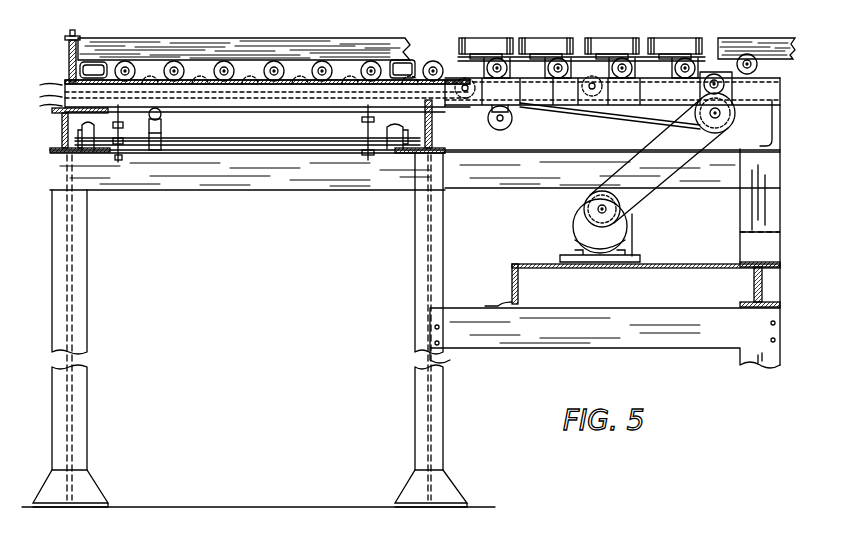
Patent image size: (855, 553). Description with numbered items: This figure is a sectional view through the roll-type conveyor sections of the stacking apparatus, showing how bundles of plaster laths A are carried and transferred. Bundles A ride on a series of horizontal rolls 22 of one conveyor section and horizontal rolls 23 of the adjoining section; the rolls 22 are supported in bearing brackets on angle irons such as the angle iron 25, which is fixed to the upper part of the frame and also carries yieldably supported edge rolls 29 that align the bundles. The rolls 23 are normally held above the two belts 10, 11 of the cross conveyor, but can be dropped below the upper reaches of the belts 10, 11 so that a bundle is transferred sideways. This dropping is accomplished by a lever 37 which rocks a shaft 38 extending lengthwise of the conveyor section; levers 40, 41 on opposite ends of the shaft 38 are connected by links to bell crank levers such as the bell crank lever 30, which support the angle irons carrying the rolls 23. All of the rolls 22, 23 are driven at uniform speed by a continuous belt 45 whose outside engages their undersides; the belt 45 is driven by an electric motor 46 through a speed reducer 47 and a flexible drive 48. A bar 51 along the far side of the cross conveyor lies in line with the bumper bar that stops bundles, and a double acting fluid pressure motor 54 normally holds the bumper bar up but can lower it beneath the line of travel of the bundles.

The bundles of plaster laths A is at (298, 41).
The bar 51 is at (78, 40).
The belt 11 is at (90, 62).
The belt 10 is at (400, 58).
The horizontal rolls 23 is at (279, 69).
The edge rolls 29 is at (545, 38).
The horizontal rolls 22 is at (487, 72).
The double acting fluid pressure motor 54 is at (52, 85).
The lever 37 is at (161, 134).
The shaft 38 is at (252, 148).
The lever 40 is at (124, 144).
The bell crank lever 30 is at (368, 112).
The lever 41 is at (368, 153).
The continuous belt 45 is at (593, 114).
The angle iron 25 is at (750, 92).
The flexible drive 48 is at (657, 138).
The electric motor 46 is at (576, 248).
The speed reducer 47 is at (626, 229).